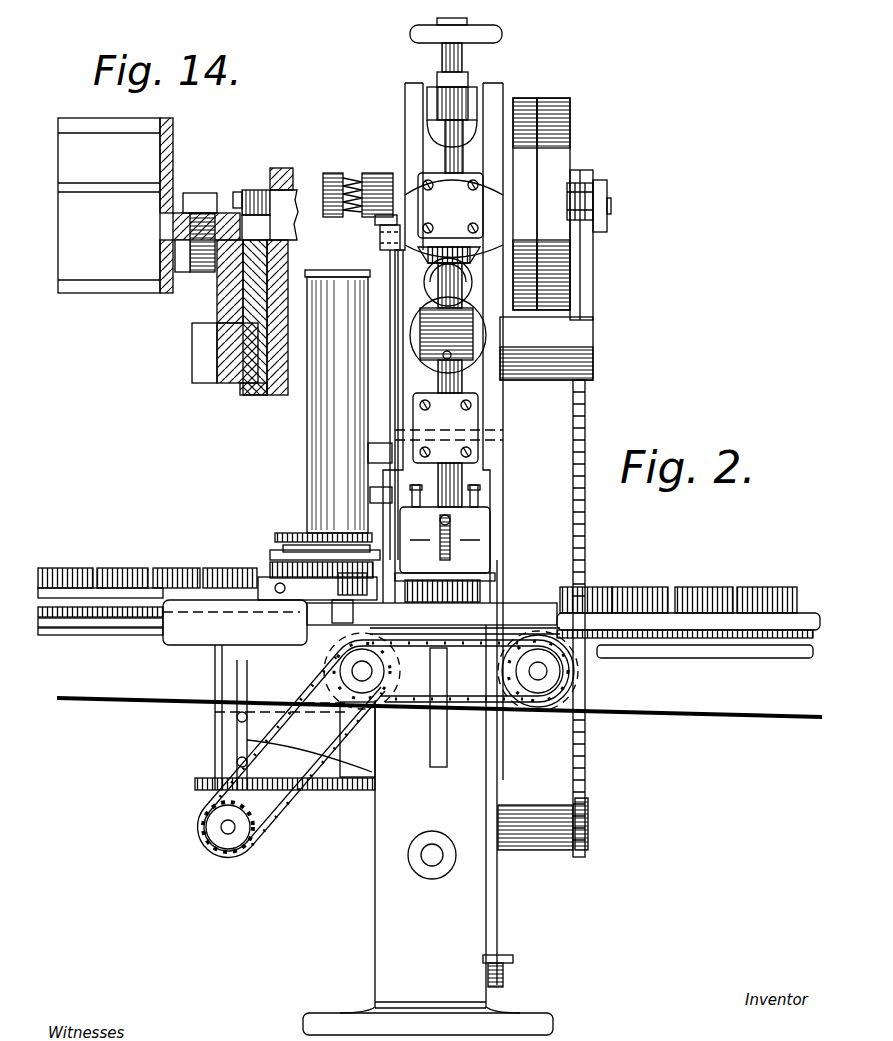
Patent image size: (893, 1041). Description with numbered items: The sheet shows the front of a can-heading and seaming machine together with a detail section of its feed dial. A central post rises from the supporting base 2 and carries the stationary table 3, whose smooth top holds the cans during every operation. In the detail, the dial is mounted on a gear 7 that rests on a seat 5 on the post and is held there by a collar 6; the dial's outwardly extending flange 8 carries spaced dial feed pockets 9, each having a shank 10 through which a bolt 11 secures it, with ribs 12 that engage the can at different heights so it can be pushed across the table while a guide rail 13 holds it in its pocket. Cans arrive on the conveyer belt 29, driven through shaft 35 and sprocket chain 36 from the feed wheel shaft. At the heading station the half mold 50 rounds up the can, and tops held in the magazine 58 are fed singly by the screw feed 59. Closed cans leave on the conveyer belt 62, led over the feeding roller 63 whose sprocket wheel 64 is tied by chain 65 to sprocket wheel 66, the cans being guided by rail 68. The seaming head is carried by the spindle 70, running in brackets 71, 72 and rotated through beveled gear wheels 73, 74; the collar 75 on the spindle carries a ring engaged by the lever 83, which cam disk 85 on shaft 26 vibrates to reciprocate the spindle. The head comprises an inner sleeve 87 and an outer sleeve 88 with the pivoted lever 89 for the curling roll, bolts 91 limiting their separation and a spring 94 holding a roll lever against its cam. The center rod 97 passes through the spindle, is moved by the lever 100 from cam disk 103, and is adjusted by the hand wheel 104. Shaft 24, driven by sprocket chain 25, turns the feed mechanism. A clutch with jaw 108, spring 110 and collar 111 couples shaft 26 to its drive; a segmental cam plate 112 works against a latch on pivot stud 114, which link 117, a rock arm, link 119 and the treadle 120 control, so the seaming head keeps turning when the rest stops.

In FIG. 2, the supporting base 2 is at (428, 559).
In FIG. 2, the table 3 is at (473, 637).
In FIG. 14, the seat 5 is at (250, 388).
In FIG. 14, the collar 6 is at (265, 201).
In FIG. 14, the gear 7 is at (197, 360).
In FIG. 14, the outwardly extending flange 8 is at (176, 258).
In FIG. 14, the dial feed pockets 9 is at (160, 218).
In FIG. 14, the shank 10 is at (228, 213).
In FIG. 14, the bolt 11 is at (196, 193).
In FIG. 14, the ribs 12 is at (88, 133).
In FIG. 2, the guide rail 13 is at (433, 617).
In FIG. 2, the shaft 24 is at (589, 825).
In FIG. 2, the sprocket chain 25 is at (580, 765).
In FIG. 2, the shaft 26 is at (610, 208).
In FIG. 2, the conveyer belt 29 is at (96, 612).
In FIG. 2, the shaft 35 is at (228, 838).
In FIG. 2, the sprocket chain 36 is at (272, 806).
In FIG. 2, the half mold 50 is at (353, 606).
In FIG. 2, the magazine 58 is at (318, 482).
In FIG. 2, the screw feed 59 is at (268, 563).
In FIG. 2, the conveyer belt 62 is at (742, 716).
In FIG. 2, the feeding roller 63 is at (575, 678).
In FIG. 2, the sprocket wheel 64 is at (570, 695).
In FIG. 2, the chain 65 is at (414, 702).
In FIG. 2, the sprocket wheel 66 is at (394, 672).
In FIG. 2, the guiding rail 68 is at (711, 612).
In FIG. 2, the spindle 70 is at (462, 282).
In FIG. 2, the bracket 71 is at (450, 205).
In FIG. 2, the bracket 72 is at (445, 428).
In FIG. 2, the beveled gear wheel 73 is at (472, 255).
In FIG. 2, the beveled gear wheel 74 is at (425, 280).
In FIG. 2, the collar 75 is at (450, 360).
In FIG. 2, the lever 83 is at (478, 332).
In FIG. 2, the cam disk 85 is at (565, 133).
In FIG. 2, the inner sleeve 87 is at (487, 512).
In FIG. 2, the outer sleeve 88 is at (445, 540).
In FIG. 2, the pivoted lever 89 is at (408, 552).
In FIG. 2, the bolts 91 is at (466, 485).
In FIG. 2, the spring 94 is at (452, 540).
In FIG. 2, the center rod 97 is at (458, 132).
In FIG. 2, the lever 100 is at (433, 88).
In FIG. 2, the cam disk 103 is at (527, 96).
In FIG. 2, the hand wheel 104 is at (505, 38).
In FIG. 2, the jaw or clutch 108 is at (378, 175).
In FIG. 2, the spring 110 is at (352, 174).
In FIG. 2, the collar 111 is at (326, 178).
In FIG. 2, the segmental cam plate 112 is at (376, 228).
In FIG. 2, the pivot stud 114 is at (381, 243).
In FIG. 2, the link 117 is at (393, 382).
In FIG. 2, the link 119 is at (498, 568).
In FIG. 2, the treadle 120 is at (503, 958).